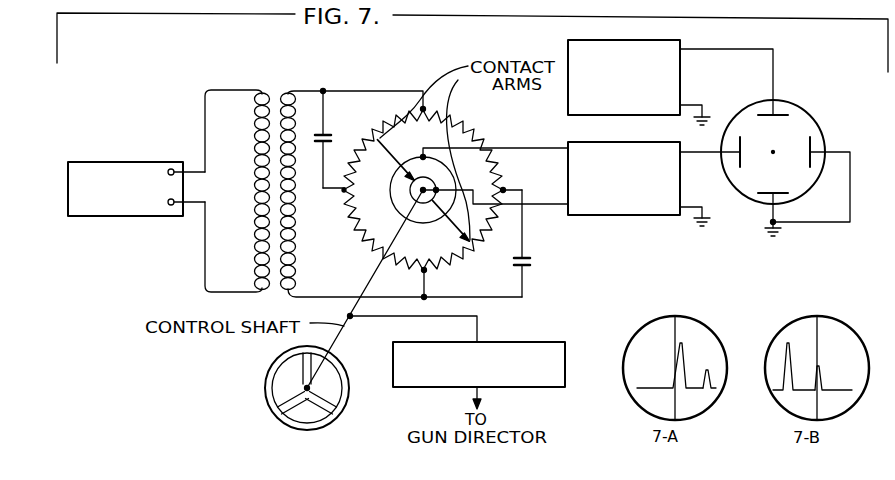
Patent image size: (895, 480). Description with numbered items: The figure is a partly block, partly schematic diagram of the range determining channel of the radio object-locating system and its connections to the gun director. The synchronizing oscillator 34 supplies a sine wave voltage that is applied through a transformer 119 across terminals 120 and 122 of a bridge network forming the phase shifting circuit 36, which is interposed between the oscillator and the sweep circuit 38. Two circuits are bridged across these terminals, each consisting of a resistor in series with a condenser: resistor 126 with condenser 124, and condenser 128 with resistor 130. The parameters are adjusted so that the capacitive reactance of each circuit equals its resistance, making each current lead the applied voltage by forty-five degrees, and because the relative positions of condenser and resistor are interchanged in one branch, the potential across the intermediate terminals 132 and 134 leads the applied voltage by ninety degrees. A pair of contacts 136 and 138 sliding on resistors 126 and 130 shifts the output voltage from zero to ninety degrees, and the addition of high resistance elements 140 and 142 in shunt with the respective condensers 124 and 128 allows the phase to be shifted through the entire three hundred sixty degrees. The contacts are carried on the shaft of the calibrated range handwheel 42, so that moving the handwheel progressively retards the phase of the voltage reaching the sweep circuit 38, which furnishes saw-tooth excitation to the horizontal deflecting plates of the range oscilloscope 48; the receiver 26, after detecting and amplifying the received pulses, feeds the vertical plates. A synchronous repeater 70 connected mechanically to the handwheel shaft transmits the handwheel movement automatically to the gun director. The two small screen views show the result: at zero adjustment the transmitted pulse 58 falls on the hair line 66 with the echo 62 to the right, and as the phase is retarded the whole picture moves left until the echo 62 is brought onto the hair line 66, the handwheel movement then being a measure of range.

In FIG. 7, the superheterodyne receiver 26 is at (640, 40).
In FIG. 7, the synchronizing oscillator 34 is at (153, 162).
In FIG. 7, the phase shifting circuit 36 is at (353, 85).
In FIG. 7, the sweep circuit 38 is at (647, 142).
In FIG. 7, the range handwheel 42 is at (277, 405).
In FIG. 7, the range oscilloscope 48 is at (808, 108).
In FIG. 7-A, the transmitted pulse 58 is at (679, 352).
In FIG. 7-B, the transmitted pulse 58 is at (787, 350).
In FIG. 7-A, the echo 62 is at (708, 375).
In FIG. 7-B, the echo 62 is at (821, 378).
In FIG. 7-A, the hair line 66 is at (677, 331).
In FIG. 7-B, the hair line 66 is at (818, 344).
In FIG. 7, the synchronous repeater 70 is at (535, 342).
In FIG. 7, the transformer 119 is at (278, 90).
In FIG. 7, the terminal 120 is at (424, 106).
In FIG. 7, the terminal 122 is at (423, 277).
In FIG. 7, the condenser 124 is at (328, 132).
In FIG. 7, the resistor 126 is at (363, 246).
In FIG. 7, the condenser 128 is at (528, 262).
In FIG. 7, the resistor 130 is at (465, 125).
In FIG. 7, the intermediate terminal 132 is at (345, 198).
In FIG. 7, the intermediate terminal 134 is at (504, 189).
In FIG. 7, the contact 136 is at (378, 144).
In FIG. 7, the contact 138 is at (465, 242).
In FIG. 7, the high resistance element 140 is at (381, 126).
In FIG. 7, the high resistance element 142 is at (468, 254).